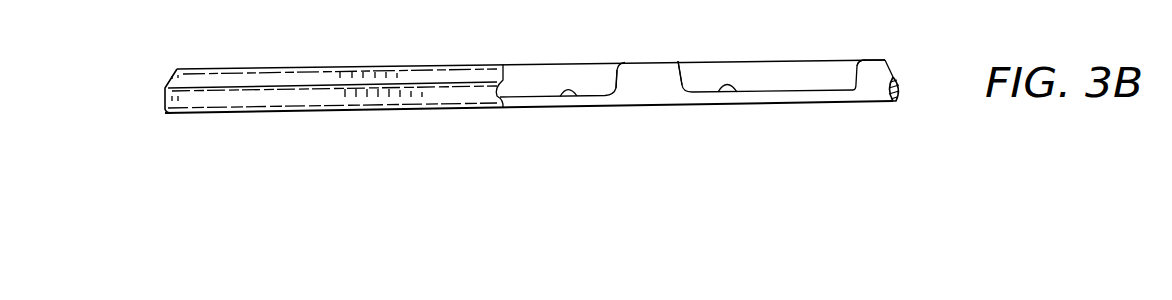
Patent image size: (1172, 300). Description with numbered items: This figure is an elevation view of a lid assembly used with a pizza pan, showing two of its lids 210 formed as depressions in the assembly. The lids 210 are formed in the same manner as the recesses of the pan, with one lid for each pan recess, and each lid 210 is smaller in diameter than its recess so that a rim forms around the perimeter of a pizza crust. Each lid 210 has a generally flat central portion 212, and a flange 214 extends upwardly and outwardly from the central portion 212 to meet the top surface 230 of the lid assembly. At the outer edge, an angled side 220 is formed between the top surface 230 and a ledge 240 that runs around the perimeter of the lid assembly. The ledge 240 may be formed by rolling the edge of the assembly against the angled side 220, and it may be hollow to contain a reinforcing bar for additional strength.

The lid 210 is at (540, 76).
The central portion 212 is at (575, 99).
The flange 214 is at (611, 62).
The angled side 220 is at (890, 60).
The top surface 230 is at (868, 60).
The ledge 240 is at (902, 92).